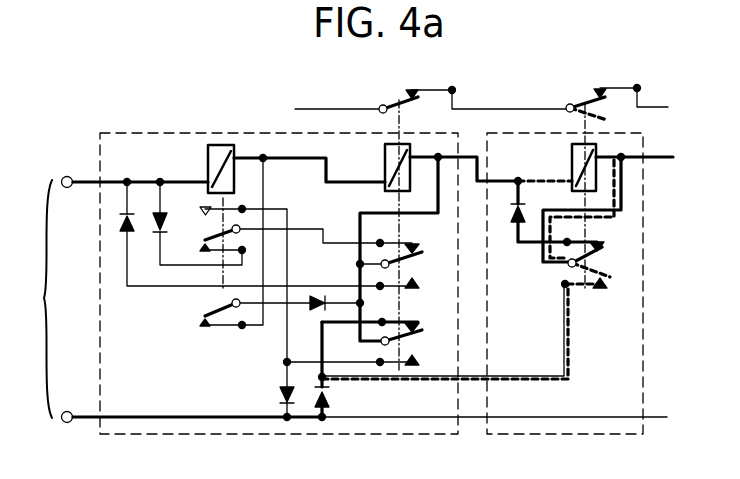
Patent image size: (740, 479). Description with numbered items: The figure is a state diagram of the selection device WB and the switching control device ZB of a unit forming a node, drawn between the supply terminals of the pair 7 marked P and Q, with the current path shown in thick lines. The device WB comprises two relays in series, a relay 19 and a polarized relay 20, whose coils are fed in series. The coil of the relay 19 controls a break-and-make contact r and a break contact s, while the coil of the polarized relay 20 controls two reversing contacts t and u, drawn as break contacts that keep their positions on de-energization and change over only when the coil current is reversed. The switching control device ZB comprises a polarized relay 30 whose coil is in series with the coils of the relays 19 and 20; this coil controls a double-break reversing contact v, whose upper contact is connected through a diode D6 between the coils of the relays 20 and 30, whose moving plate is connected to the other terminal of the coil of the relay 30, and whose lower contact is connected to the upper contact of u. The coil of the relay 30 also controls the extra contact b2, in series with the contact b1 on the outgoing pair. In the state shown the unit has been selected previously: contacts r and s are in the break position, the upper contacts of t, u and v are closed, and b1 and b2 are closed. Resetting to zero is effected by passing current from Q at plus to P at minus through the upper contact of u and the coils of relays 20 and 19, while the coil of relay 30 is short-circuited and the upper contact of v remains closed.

The terminal group (P-, Q+ supply terminals) 7 is at (64, 287).
The relay 19 is at (210, 158).
The polarized relay 20 is at (385, 158).
The polarized relay 30 is at (572, 158).
The device WB is at (133, 155).
The switching control device ZB is at (618, 335).
The contact b1 is at (396, 98).
The extra contact b2 is at (590, 96).
The break and make contact r is at (212, 235).
The break contact s is at (204, 310).
The reversing contact t is at (422, 258).
The reversing contact u is at (422, 338).
The reversing contact v is at (602, 257).
The diode D6 is at (510, 215).